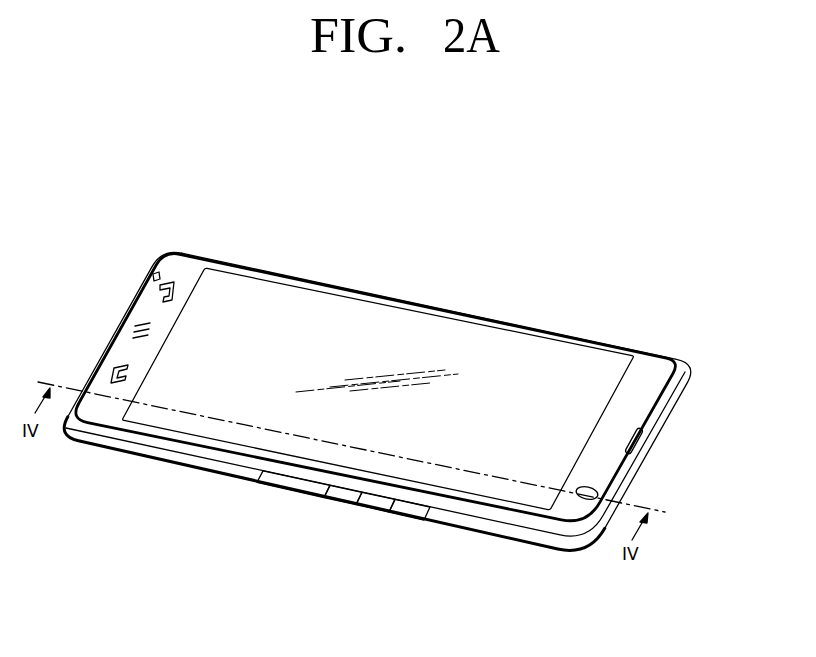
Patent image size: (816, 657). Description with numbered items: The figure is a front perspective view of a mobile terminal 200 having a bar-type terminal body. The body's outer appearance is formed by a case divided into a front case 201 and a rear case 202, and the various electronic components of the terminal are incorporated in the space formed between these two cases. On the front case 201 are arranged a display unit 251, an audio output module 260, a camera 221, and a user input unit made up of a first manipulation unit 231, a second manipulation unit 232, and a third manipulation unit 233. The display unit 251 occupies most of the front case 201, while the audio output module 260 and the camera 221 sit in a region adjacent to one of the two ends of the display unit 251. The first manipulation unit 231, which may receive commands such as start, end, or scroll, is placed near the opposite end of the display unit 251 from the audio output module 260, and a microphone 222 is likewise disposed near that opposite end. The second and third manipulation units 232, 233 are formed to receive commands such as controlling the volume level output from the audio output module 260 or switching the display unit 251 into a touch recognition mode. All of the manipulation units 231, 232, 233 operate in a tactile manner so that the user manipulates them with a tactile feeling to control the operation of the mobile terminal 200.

The mobile terminal 200 is at (441, 280).
The front case 201 is at (670, 388).
The rear case 202 is at (667, 418).
The camera 221 is at (598, 490).
The microphone 222 is at (155, 273).
The first manipulation unit 231 is at (182, 257).
The second manipulation unit 232 is at (403, 510).
The third manipulation unit 233 is at (298, 488).
The display unit 251 is at (310, 302).
The audio output module 260 is at (637, 433).